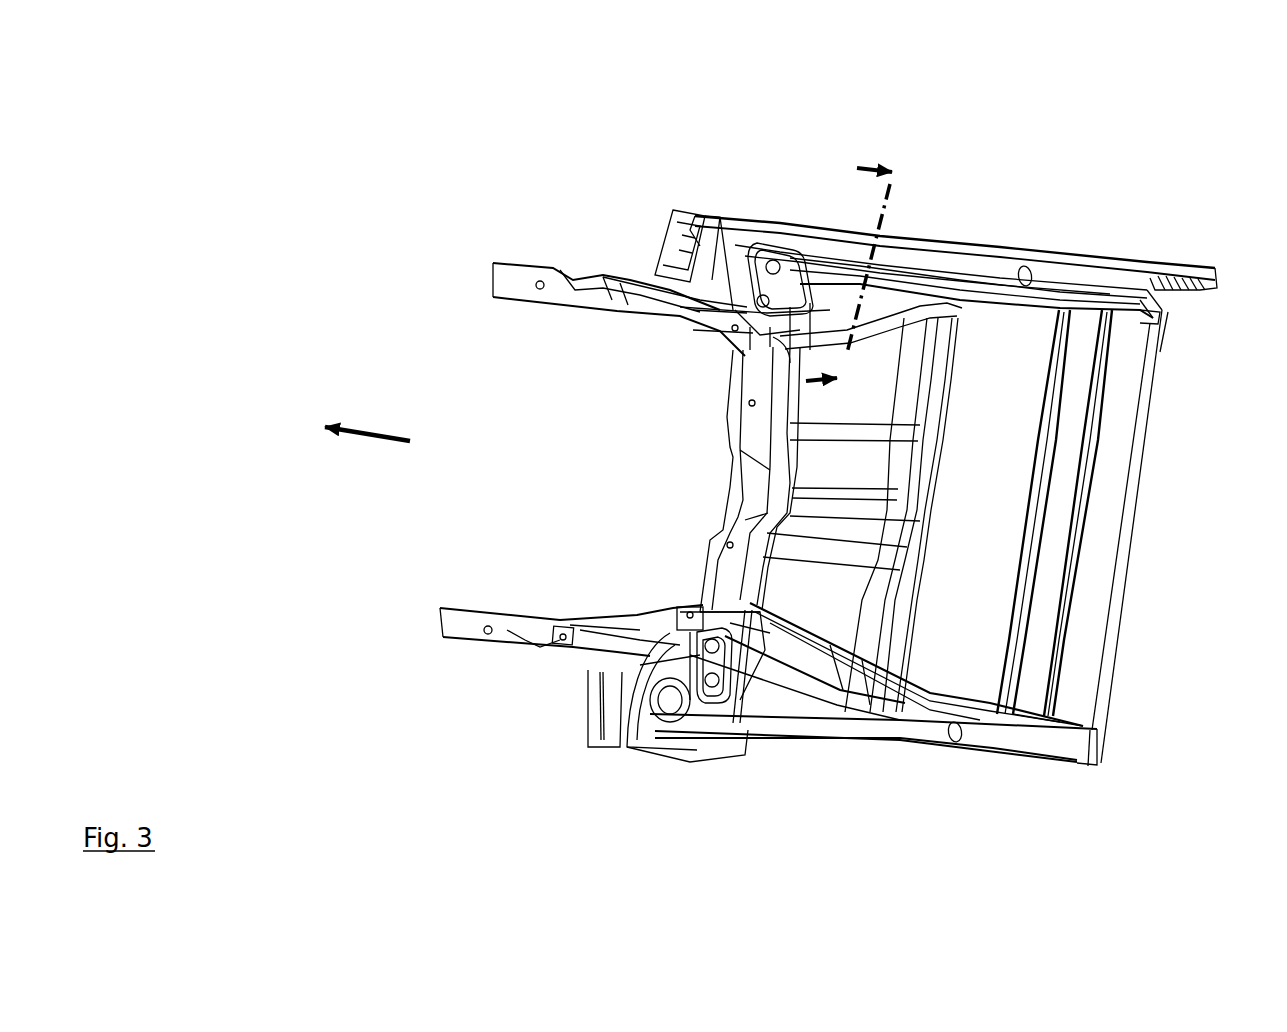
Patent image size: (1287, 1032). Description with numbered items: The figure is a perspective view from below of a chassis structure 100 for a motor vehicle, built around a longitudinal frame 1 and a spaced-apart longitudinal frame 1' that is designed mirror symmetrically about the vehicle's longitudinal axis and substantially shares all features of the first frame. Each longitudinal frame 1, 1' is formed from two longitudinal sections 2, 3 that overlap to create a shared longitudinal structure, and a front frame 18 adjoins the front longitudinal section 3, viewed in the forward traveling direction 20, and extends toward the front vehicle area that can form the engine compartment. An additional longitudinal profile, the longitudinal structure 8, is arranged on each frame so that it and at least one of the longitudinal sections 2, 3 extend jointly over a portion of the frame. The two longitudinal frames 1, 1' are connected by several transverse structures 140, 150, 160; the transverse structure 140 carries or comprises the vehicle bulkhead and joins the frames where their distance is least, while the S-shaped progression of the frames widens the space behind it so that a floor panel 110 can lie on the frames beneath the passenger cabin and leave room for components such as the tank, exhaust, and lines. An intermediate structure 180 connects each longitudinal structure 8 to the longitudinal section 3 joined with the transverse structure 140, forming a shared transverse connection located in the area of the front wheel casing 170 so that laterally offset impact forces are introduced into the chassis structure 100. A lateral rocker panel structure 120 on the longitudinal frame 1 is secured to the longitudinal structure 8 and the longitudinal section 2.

The chassis structure 100 is at (384, 288).
The forward traveling direction 20 is at (363, 428).
The front frame 18 is at (515, 277).
The front wheel casing 170 is at (727, 207).
The intermediate structure 180 is at (793, 252).
The longitudinal structure 8 is at (843, 250).
The longitudinal frame 1 is at (952, 172).
The longitudinal frame 1' is at (869, 801).
The longitudinal section 3 is at (884, 293).
The longitudinal section 2 is at (1049, 277).
The lateral rocker panel structure 120 is at (1196, 272).
The transverse structure 150 is at (907, 460).
The transverse structure 160 is at (1057, 508).
The floor panel 110 is at (1107, 584).
The transverse structure 140 is at (735, 560).